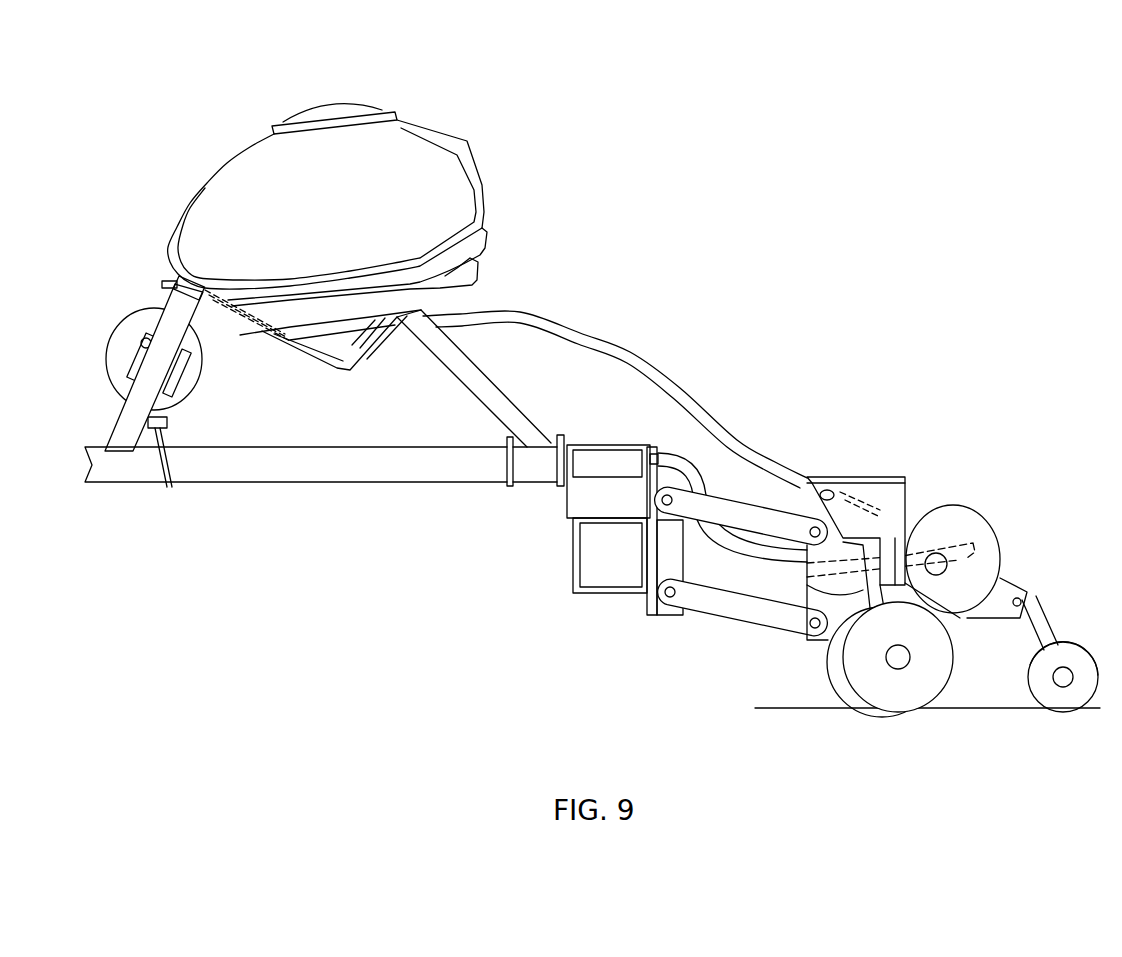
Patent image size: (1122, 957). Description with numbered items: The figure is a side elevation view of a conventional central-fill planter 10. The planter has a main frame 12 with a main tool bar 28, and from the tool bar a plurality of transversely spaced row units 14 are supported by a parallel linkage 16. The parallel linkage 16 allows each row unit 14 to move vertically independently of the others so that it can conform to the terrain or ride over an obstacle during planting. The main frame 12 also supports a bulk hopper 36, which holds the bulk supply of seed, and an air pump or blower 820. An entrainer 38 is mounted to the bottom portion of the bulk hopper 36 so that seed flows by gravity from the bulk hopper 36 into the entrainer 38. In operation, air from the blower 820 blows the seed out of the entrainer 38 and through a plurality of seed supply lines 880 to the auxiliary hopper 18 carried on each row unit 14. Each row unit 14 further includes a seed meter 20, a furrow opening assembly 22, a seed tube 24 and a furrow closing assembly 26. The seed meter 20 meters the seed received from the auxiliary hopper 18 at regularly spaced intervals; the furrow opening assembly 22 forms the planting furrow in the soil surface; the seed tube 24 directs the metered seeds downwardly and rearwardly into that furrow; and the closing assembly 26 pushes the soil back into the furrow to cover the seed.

The central-fill planter 10 is at (632, 230).
The main frame 12 is at (398, 472).
The row unit 14 is at (927, 485).
The parallel linkage 16 is at (738, 627).
The auxiliary hopper 18 is at (878, 488).
The seed meter 20 is at (958, 518).
The furrow opening assembly 22 is at (855, 668).
The seed tube 24 is at (827, 593).
The furrow closing assembly 26 is at (1067, 657).
The main tool bar 28 is at (573, 557).
The bulk hopper 36 is at (336, 218).
The entrainer 38 is at (362, 367).
The air pump or blower 820 is at (128, 335).
The seed supply line 880 is at (585, 333).